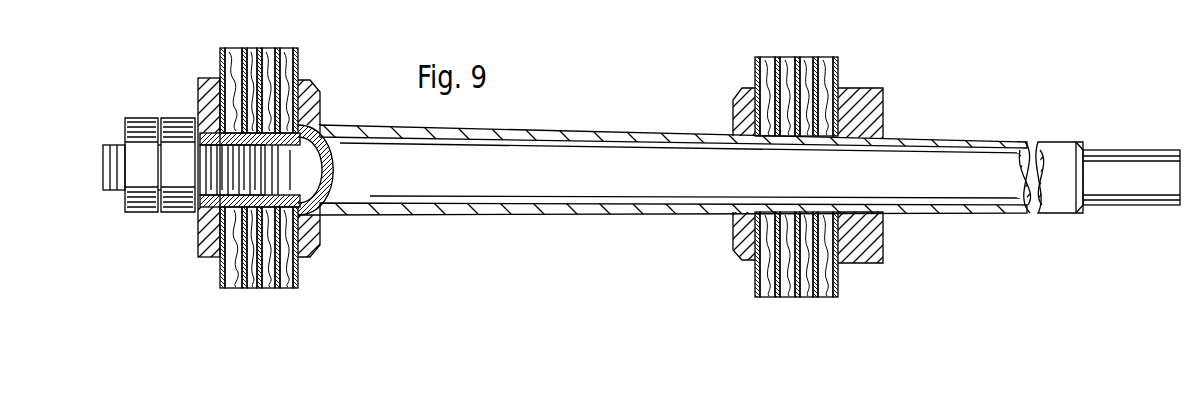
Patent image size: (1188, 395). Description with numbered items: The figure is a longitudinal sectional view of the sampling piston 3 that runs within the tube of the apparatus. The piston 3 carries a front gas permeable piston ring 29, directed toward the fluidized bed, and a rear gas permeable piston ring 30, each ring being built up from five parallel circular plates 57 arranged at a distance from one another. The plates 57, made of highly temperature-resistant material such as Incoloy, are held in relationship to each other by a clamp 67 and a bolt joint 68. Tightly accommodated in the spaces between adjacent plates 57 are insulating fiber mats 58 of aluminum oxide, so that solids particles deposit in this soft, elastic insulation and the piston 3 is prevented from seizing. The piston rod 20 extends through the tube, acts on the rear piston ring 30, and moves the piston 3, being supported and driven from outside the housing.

The sampling piston 3 is at (431, 215).
The piston rod 20 is at (952, 155).
The front gas permeable piston ring 29 is at (234, 196).
The rear gas permeable piston ring 30 is at (790, 298).
The parallel circular plates 57 is at (286, 290).
The insulating fiber mats 58 is at (245, 290).
The clamp 67 is at (312, 240).
The bolt joint 68 is at (146, 216).